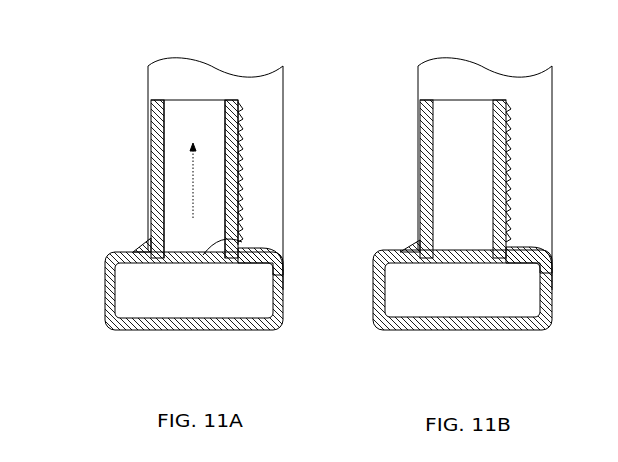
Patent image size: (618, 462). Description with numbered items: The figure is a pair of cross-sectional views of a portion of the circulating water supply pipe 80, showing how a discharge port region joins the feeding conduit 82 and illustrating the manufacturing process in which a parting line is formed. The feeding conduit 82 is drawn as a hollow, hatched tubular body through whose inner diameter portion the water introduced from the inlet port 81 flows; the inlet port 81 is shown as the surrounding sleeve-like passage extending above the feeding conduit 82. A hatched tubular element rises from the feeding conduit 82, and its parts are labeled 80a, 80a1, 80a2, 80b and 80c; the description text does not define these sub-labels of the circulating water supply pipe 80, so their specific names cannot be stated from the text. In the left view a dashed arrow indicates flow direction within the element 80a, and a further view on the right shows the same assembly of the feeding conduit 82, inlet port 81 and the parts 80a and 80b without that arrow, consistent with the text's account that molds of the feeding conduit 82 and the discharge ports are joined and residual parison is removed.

In FIG. 11A, the circulating water supply pipe 80 is at (181, 157).
In FIG. 11B, the circulating water supply pipe 80 is at (453, 158).
In FIG. 11A, the tube body 80a is at (177, 141).
In FIG. 11B, the tube body 80a is at (410, 255).
In FIG. 11A, the tube inner channel 80a1 is at (193, 99).
In FIG. 11A, the tube outer thread 80a2 is at (240, 236).
In FIG. 11A, the tube flange 80b is at (143, 252).
In FIG. 11B, the tube flange 80b is at (420, 150).
In FIG. 11A, the tube flange edge 80c is at (240, 255).
In FIG. 11B, the inlet port 81 is at (527, 172).
In FIG. 11A, the feeding conduit 82 is at (258, 296).
In FIG. 11B, the feeding conduit 82 is at (525, 293).